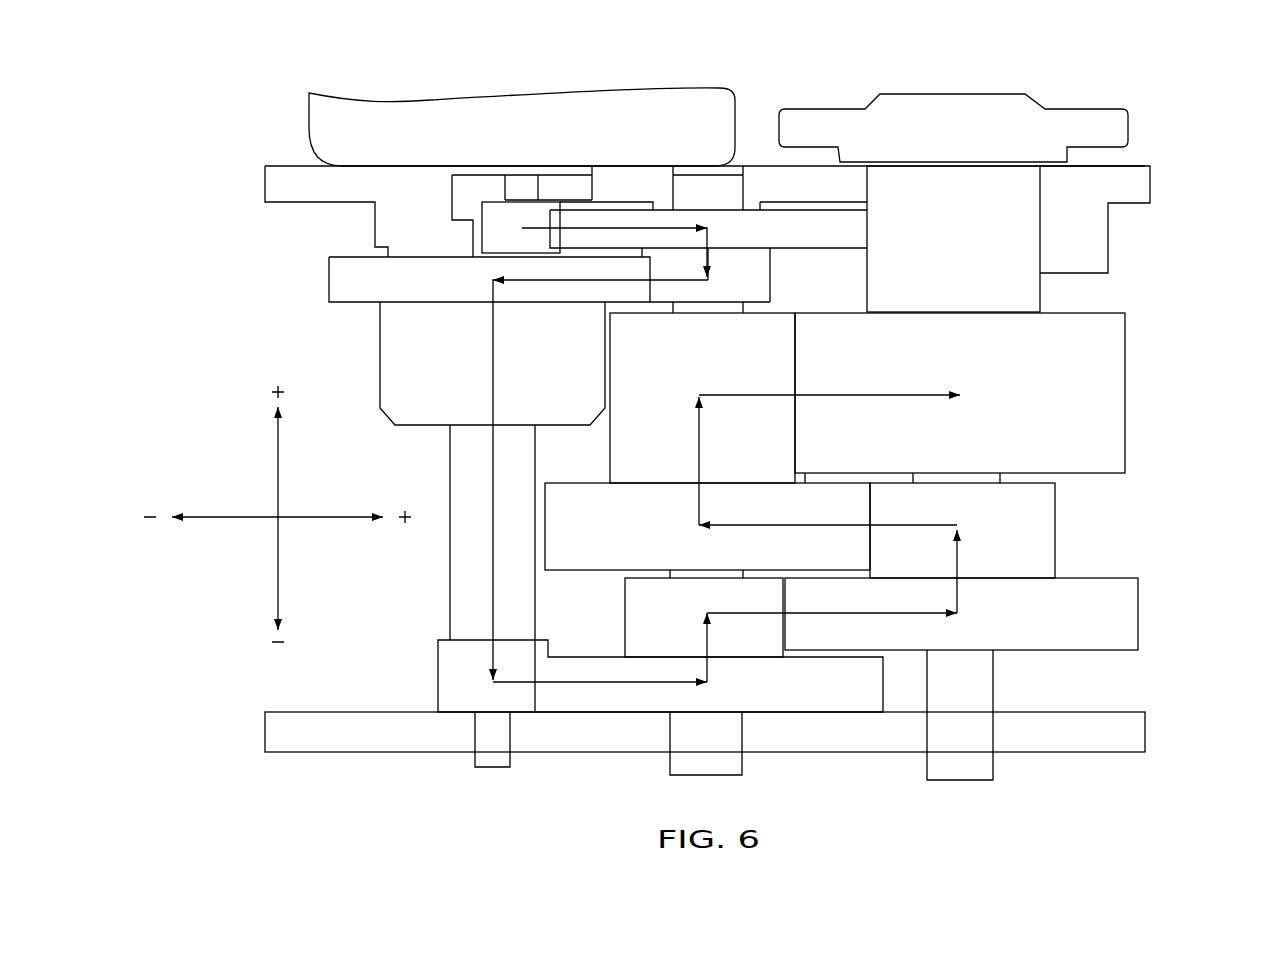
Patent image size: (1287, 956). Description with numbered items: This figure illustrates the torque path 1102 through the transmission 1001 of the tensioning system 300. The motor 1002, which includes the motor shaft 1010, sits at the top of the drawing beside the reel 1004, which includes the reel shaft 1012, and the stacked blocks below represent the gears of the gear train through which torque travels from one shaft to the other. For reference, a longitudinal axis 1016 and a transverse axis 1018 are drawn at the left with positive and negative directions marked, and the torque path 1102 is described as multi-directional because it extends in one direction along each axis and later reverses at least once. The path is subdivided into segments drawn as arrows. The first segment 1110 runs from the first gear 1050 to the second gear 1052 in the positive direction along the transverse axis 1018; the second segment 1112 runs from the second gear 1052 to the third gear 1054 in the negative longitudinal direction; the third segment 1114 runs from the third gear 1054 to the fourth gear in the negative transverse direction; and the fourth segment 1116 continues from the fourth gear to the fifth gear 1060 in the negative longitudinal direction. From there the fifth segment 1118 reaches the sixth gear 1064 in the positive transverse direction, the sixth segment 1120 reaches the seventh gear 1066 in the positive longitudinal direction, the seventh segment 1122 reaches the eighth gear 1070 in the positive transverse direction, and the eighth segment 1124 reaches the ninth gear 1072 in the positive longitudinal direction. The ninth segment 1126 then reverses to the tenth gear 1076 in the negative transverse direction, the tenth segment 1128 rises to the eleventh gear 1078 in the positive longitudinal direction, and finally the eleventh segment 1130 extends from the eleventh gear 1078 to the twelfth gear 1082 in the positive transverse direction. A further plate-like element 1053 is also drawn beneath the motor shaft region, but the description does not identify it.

The tensioning system 300 is at (245, 98).
The transmission 1001 is at (1192, 457).
The motor 1002 is at (322, 140).
The reel 1004 is at (1117, 132).
The motor shaft 1010 is at (517, 185).
The reel shaft 1012 is at (1025, 258).
The longitudinal axis 1016 is at (278, 470).
The transverse axis 1018 is at (305, 520).
The first gear 1050 is at (503, 223).
The second gear 1052 is at (785, 222).
The plate 1053 is at (345, 290).
The third gear 1054 is at (758, 270).
The fifth gear 1060 is at (445, 668).
The sixth gear 1064 is at (628, 694).
The seventh gear 1066 is at (648, 612).
The eighth gear 1070 is at (1130, 622).
The ninth gear 1072 is at (1045, 520).
The tenth gear 1076 is at (575, 508).
The eleventh gear 1078 is at (650, 415).
The twelfth gear 1082 is at (1105, 340).
The torque path 1102 is at (490, 343).
The first segment 1110 is at (590, 225).
The second segment 1112 is at (715, 255).
The third segment 1114 is at (590, 302).
The fourth segment 1116 is at (488, 440).
The fifth segment 1118 is at (572, 690).
The sixth segment 1120 is at (710, 650).
The seventh segment 1122 is at (835, 615).
The eighth segment 1124 is at (960, 573).
The ninth segment 1126 is at (765, 525).
The tenth segment 1128 is at (705, 455).
The eleventh segment 1130 is at (835, 398).